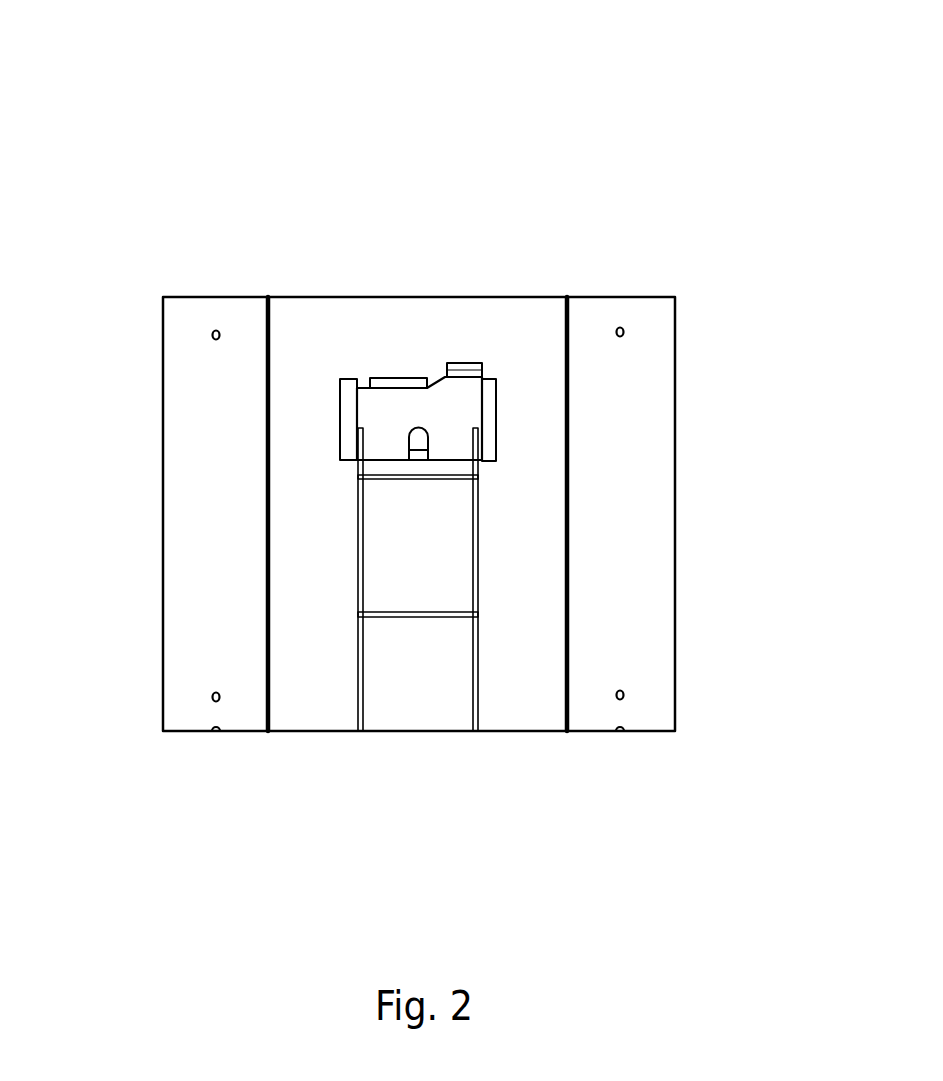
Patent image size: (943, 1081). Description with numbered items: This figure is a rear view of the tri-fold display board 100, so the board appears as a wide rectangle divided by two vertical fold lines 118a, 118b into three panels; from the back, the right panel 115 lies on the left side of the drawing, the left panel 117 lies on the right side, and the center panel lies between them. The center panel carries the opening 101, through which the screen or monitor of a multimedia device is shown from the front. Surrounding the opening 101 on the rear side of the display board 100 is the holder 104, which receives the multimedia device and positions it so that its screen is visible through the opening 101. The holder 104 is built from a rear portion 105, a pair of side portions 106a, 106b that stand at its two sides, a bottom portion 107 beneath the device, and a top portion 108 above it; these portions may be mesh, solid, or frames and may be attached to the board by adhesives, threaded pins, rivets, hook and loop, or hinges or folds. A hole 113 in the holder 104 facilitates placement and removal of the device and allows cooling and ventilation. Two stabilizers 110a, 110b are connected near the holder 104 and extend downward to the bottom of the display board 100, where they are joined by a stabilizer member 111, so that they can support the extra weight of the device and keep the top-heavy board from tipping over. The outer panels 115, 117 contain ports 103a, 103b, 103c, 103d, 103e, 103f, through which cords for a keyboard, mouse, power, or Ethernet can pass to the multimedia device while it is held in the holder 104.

The tri-fold display board 100 is at (136, 150).
The opening 101 is at (380, 380).
The holder 104 is at (465, 340).
The rear portion 105 is at (415, 407).
The side portion 106a is at (488, 420).
The side portion 106b is at (348, 408).
The bottom portion 107 is at (433, 470).
The top portion 108 is at (468, 368).
The stabilizer 110a is at (478, 672).
The stabilizer 110b is at (363, 695).
The stabilizer member 111 is at (405, 615).
The hole 113 is at (418, 440).
The right panel 115 is at (215, 570).
The left panel 117 is at (622, 587).
The right fold line 118a is at (567, 297).
The left fold line 118b is at (268, 297).
The port 103a is at (212, 335).
The port 103b is at (212, 697).
The port 103c is at (217, 734).
The port 103d is at (621, 734).
The port 103e is at (625, 695).
The port 103f is at (624, 330).